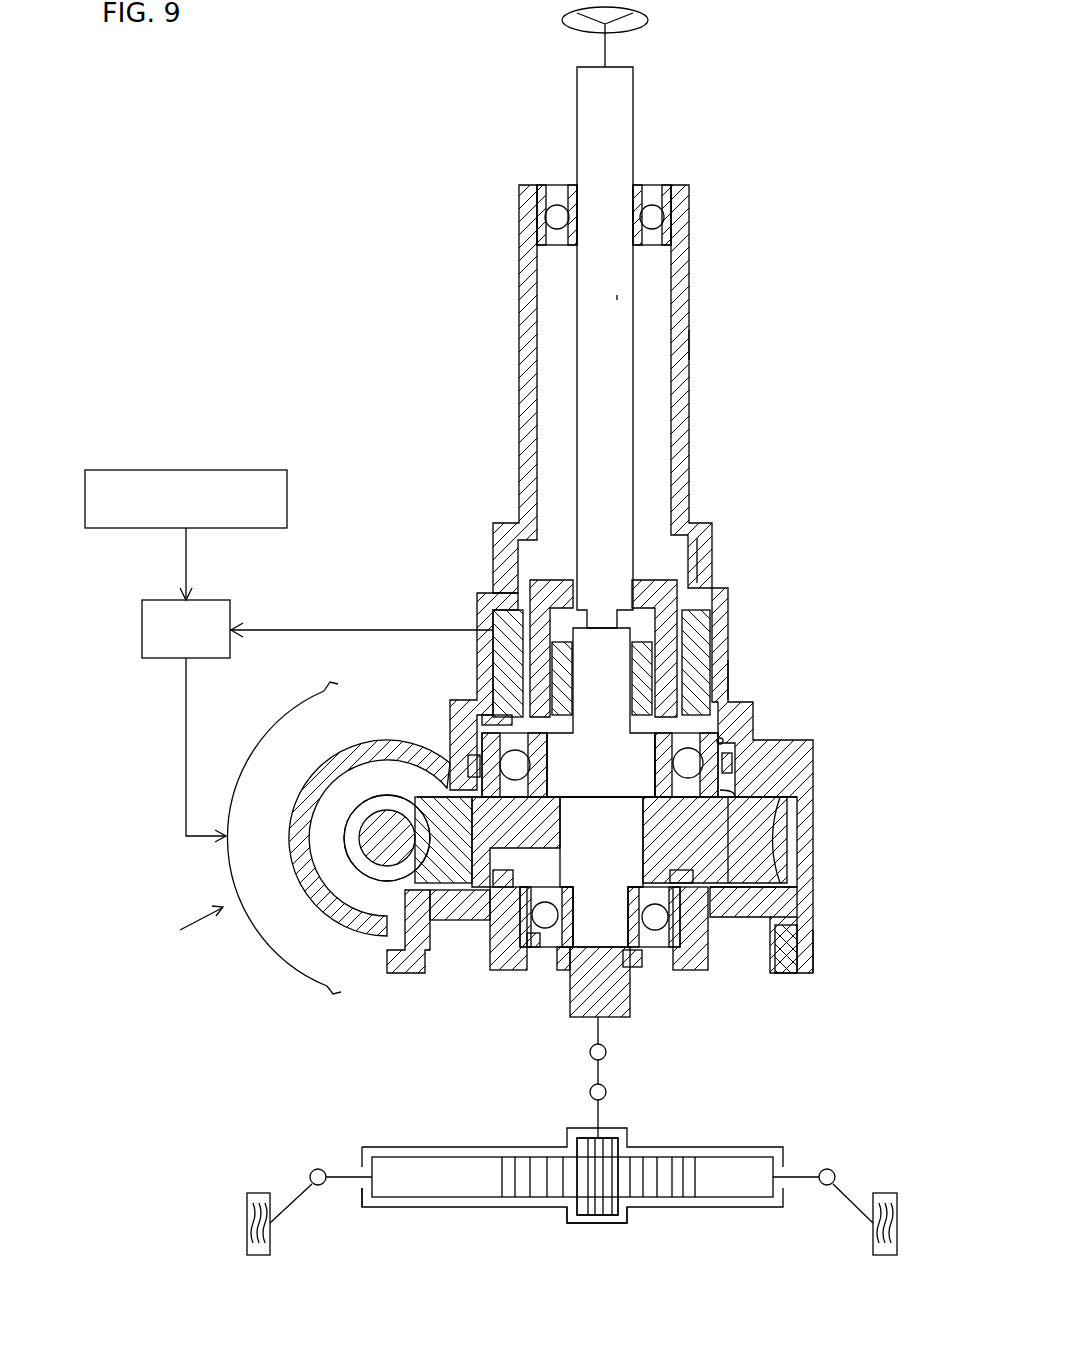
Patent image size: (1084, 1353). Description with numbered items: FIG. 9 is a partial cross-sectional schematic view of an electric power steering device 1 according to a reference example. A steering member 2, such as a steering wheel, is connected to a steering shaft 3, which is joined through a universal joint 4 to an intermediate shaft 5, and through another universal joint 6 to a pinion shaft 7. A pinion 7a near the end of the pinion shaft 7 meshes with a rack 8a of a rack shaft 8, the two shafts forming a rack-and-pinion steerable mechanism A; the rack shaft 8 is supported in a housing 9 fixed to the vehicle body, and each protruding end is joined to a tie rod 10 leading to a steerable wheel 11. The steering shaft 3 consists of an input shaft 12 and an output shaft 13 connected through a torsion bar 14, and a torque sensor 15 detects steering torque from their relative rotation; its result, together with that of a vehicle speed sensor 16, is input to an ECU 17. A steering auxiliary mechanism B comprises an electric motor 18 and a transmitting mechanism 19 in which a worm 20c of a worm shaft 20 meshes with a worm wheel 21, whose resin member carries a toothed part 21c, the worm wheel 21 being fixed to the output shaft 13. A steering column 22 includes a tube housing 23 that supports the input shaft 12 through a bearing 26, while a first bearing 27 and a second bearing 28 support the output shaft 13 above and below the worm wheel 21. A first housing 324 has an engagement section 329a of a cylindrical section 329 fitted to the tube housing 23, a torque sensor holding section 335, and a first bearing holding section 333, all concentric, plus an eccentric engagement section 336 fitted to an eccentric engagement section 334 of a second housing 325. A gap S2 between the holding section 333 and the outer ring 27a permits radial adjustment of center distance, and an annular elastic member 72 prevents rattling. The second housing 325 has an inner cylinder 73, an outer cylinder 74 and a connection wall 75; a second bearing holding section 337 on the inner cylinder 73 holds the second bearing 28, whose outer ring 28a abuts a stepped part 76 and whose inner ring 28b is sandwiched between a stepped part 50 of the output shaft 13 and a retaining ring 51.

The electric power steering device 1 is at (703, 75).
The steering member 2 is at (563, 24).
The steering shaft 3 is at (640, 112).
The universal joint 4 is at (606, 1052).
The intermediate shaft 5 is at (598, 1072).
The universal joint 6 is at (606, 1095).
The pinion shaft 7 is at (593, 1116).
The pinion 7a is at (605, 1205).
The rack shaft 8 is at (662, 1203).
The rack 8a is at (547, 1185).
The housing 9 is at (465, 1146).
The tie rod 10 is at (292, 1200).
The steerable wheel 11 is at (258, 1193).
The input shaft 12 is at (617, 295).
The output shaft 13 is at (612, 1005).
The torsion bar 14 is at (603, 625).
The torque sensor 15 is at (707, 628).
The vehicle speed sensor 16 is at (218, 470).
The ECU 17 is at (213, 600).
The electric motor 18 is at (250, 928).
The transmitting mechanism 19 is at (373, 782).
The worm shaft 20 is at (387, 848).
The worm 20c is at (360, 862).
The worm wheel 21 is at (445, 870).
The toothed part 21c is at (777, 838).
The steering column 22 is at (700, 232).
The tube housing 23 is at (690, 343).
The bearing 26 is at (557, 205).
The first bearing 27 is at (520, 765).
The outer ring 27a is at (487, 730).
The second bearing 28 is at (660, 917).
The outer ring 28a is at (675, 905).
The inner ring 28b is at (578, 880).
The stepped part 50 is at (630, 892).
The retaining ring 51 is at (615, 970).
The elastic member 72 is at (733, 763).
The inner cylinder 73 is at (505, 965).
The outer cylinder 74 is at (425, 945).
The connection wall 75 is at (477, 910).
The stepped part 76 is at (668, 876).
The first housing 324 is at (735, 673).
The second housing 325 is at (820, 968).
The cylindrical section 329 is at (722, 653).
The engagement section 329a is at (700, 545).
The first bearing holding section 333 is at (722, 740).
The eccentric engagement section 334 is at (800, 930).
The torque sensor holding section 335 is at (487, 632).
The engagement section 336 is at (790, 945).
The second bearing holding section 337 is at (534, 930).
The steerable mechanism A is at (634, 1237).
The steering auxiliary mechanism B is at (188, 928).
The gap S2 is at (720, 790).